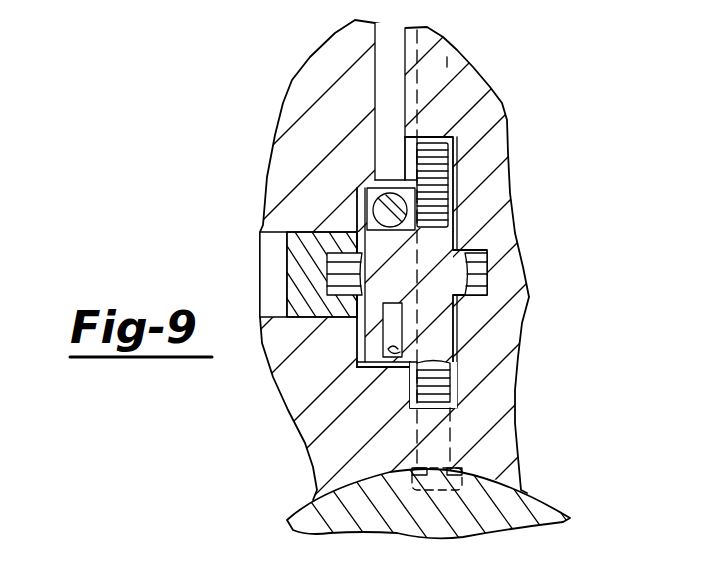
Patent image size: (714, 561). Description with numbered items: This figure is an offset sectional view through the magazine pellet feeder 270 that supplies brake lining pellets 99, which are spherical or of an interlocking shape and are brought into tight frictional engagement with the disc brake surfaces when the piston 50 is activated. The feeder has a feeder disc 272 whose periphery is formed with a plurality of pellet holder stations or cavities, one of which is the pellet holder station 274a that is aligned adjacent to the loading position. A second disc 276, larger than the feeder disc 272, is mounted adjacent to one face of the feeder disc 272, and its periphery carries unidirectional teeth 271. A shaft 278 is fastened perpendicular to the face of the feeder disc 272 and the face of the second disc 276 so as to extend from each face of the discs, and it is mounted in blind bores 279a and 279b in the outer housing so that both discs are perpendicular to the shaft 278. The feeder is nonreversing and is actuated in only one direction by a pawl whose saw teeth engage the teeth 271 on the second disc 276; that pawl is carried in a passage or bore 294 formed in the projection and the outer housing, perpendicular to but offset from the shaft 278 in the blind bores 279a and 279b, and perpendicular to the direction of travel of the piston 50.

The piston 50 is at (537, 490).
The brake lining pellets 99 is at (365, 192).
The magazine pellet feeder 270 is at (460, 143).
The unidirectional teeth 271 is at (433, 182).
The feeder disc 272 is at (300, 420).
The pellet holder station 274a is at (382, 200).
The second disc 276 is at (433, 384).
The shaft 278 is at (486, 248).
The blind bore 279a is at (487, 278).
The blind bore 279b is at (340, 255).
The passage or bore 294 is at (445, 47).